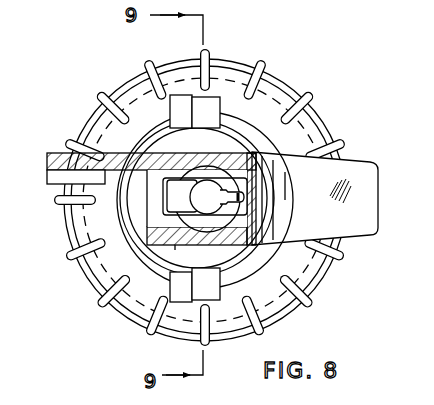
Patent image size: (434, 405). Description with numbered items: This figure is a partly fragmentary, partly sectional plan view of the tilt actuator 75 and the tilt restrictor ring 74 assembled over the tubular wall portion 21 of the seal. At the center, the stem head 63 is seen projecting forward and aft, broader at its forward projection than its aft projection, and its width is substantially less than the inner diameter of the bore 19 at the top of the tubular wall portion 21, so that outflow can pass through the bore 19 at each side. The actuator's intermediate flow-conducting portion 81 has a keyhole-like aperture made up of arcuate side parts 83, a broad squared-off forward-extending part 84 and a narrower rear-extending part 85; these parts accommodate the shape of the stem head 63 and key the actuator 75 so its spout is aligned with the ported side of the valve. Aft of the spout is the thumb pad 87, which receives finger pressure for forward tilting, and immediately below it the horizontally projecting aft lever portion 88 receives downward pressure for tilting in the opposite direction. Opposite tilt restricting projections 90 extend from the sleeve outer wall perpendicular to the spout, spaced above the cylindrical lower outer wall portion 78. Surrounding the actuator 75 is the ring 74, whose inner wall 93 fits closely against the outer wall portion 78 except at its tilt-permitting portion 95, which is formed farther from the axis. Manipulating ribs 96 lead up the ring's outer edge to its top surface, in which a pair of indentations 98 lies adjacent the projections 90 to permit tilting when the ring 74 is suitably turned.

The bore 19 is at (233, 209).
The tubular wall portion 21 is at (235, 247).
The stem head 63 is at (253, 153).
The tilt restrictor ring 74 is at (291, 79).
The tilt actuator 75 is at (377, 163).
The cylindrical lower outer wall portion 78 is at (157, 150).
The intermediate flow-conducting portion 81 is at (190, 245).
The arcuate side parts 83 is at (207, 171).
The broad squared-off forward-extending part 84 is at (167, 197).
The narrower rear-extending part 85 is at (262, 190).
The thumb pad 87 is at (273, 207).
The aft lever portion 88 is at (362, 199).
The tilt restricting projections 90 is at (212, 105).
The inner wall 93 is at (122, 236).
The tilt-permitting portion 95 is at (114, 207).
The manipulating ribs 96 is at (283, 104).
The indentations 98 is at (178, 98).